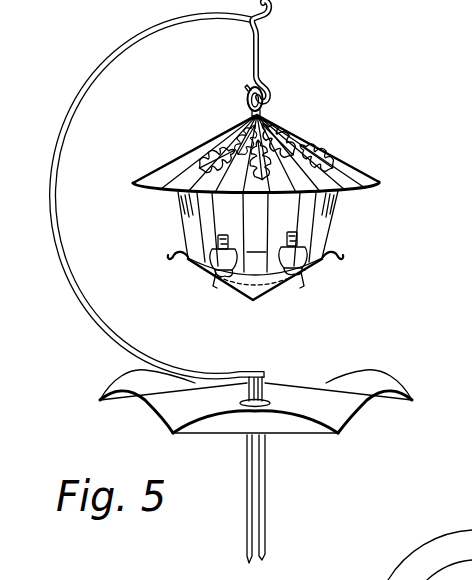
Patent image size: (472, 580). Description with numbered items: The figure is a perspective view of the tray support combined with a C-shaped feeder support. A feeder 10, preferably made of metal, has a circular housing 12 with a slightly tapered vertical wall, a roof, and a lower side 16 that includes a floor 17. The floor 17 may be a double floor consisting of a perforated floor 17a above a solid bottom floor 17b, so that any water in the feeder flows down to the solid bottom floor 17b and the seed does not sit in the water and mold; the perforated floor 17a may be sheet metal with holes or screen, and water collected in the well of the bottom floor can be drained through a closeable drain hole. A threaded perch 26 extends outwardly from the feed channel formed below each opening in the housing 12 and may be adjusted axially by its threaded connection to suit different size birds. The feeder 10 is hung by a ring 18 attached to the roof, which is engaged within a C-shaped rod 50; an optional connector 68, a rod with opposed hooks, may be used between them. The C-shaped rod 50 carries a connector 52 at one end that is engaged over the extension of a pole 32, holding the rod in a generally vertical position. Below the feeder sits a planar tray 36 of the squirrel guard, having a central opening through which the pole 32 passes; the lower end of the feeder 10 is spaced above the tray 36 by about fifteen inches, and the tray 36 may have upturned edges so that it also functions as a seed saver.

The feeder 10 is at (390, 108).
The circular housing 12 is at (258, 233).
The lower side 16 is at (311, 288).
The floor 17 is at (221, 291).
The perforated floor 17a is at (262, 296).
The solid bottom floor 17b is at (251, 303).
The ring 18 is at (264, 107).
The threaded perch 26 is at (346, 258).
The pole 32 is at (265, 537).
The planar tray 36 is at (348, 402).
The C-shaped rod 50 is at (66, 123).
The connector 52 is at (266, 384).
The connector 68 is at (259, 50).